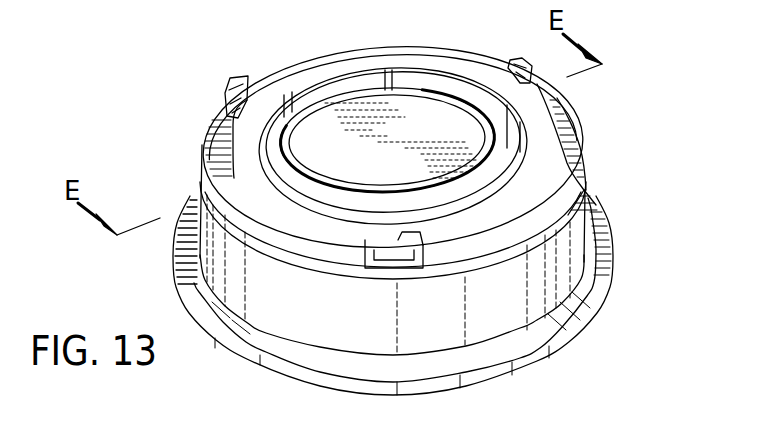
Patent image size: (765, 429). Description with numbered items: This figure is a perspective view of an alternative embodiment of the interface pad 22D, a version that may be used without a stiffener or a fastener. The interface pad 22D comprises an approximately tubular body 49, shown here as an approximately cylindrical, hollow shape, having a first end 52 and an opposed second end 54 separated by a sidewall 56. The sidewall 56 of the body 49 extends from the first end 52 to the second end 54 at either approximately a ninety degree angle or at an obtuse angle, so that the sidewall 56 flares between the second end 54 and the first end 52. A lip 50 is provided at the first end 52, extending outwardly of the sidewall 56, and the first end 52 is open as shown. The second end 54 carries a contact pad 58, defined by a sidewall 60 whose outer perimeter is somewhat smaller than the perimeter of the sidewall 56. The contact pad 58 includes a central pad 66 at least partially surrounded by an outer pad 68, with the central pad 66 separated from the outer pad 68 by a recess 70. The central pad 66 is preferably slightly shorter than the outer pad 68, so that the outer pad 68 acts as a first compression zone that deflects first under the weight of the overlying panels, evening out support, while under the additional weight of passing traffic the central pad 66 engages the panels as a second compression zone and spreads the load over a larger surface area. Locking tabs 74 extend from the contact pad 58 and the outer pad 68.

The interface pad 22D is at (640, 115).
The tubular body 49 is at (602, 207).
The lip 50 is at (607, 300).
The first end 52 is at (560, 348).
The second end 54 is at (281, 66).
The sidewall 56 is at (600, 243).
The contact pad 58 is at (333, 52).
The sidewall 60 is at (540, 176).
The central pad 66 is at (380, 98).
The outer pad 68 is at (441, 58).
The recess 70 is at (257, 147).
The locking tab 74 is at (262, 74).